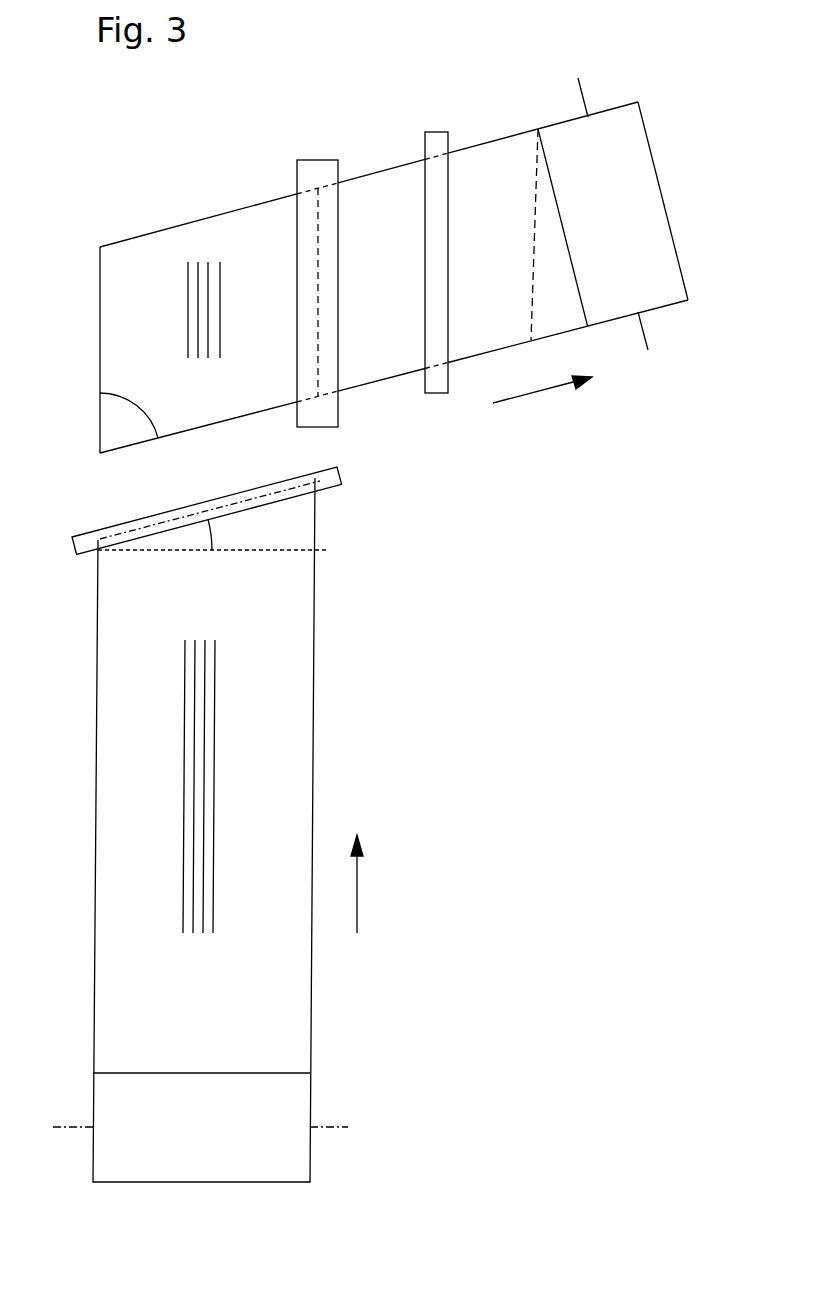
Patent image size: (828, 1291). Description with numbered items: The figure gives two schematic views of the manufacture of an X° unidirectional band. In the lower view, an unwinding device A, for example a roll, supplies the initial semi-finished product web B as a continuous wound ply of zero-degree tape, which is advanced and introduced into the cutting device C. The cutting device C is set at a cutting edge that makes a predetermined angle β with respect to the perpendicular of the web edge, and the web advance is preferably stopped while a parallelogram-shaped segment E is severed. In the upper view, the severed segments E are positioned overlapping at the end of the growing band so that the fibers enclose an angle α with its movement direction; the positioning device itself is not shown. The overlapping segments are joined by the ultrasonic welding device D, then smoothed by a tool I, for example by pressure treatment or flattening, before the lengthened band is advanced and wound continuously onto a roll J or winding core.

The unwinding device A is at (310, 1165).
The initial semi-finished product web B is at (298, 1092).
The cutting device C is at (341, 479).
The ultrasonic welding device D is at (326, 170).
The segment E is at (146, 252).
The tool I is at (438, 138).
The roll J is at (613, 127).